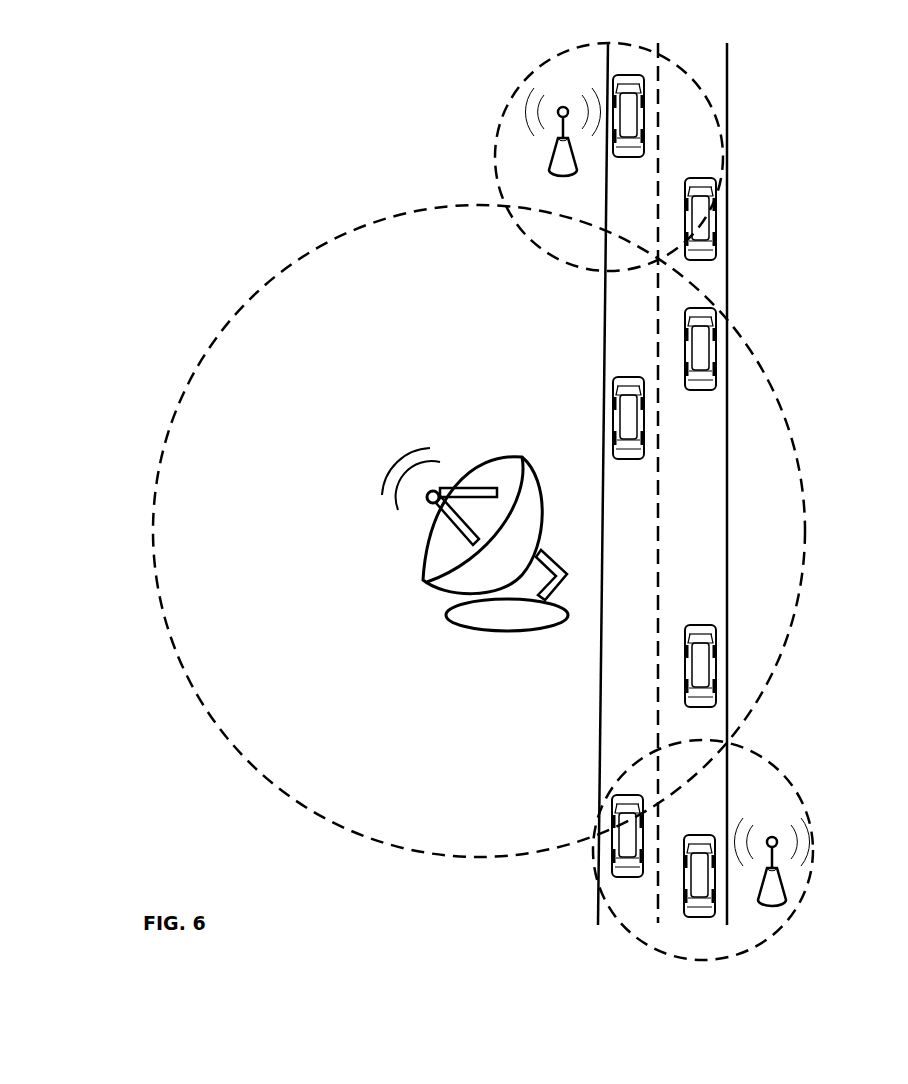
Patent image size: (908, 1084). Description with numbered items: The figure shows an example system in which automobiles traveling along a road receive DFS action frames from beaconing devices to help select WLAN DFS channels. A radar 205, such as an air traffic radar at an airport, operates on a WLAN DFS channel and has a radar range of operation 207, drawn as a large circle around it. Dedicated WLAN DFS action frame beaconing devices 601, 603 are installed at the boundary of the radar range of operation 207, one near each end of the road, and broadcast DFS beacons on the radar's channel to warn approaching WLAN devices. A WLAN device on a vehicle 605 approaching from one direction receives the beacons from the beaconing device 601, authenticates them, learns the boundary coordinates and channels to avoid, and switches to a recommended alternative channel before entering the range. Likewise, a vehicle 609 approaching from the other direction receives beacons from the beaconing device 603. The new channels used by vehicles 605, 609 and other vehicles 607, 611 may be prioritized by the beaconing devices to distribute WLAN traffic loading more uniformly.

The radar 205 is at (497, 455).
The radar range of operation 207 is at (215, 335).
The WLAN DFS action frame beaconing device 601 is at (550, 152).
The WLAN DFS action frame beaconing device 603 is at (782, 883).
The vehicle 605 is at (717, 195).
The vehicle 607 is at (609, 379).
The vehicle 609 is at (612, 812).
The vehicle 611 is at (717, 332).